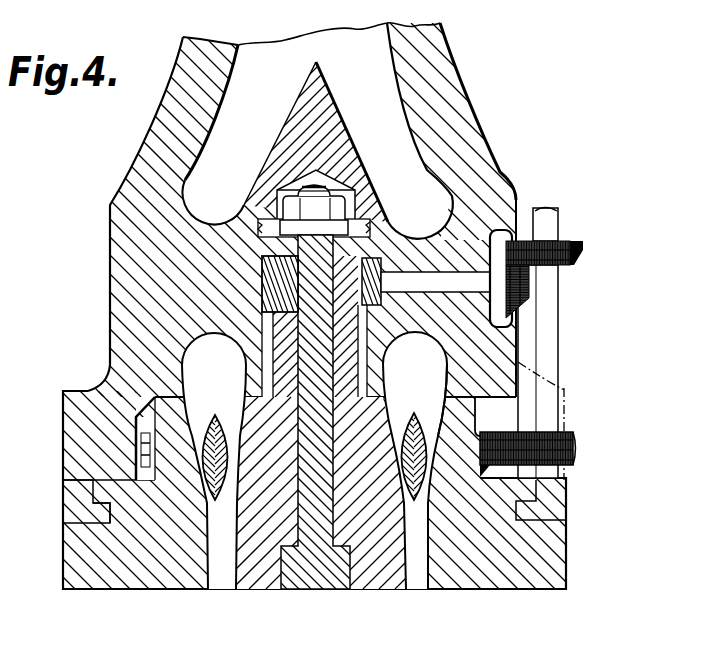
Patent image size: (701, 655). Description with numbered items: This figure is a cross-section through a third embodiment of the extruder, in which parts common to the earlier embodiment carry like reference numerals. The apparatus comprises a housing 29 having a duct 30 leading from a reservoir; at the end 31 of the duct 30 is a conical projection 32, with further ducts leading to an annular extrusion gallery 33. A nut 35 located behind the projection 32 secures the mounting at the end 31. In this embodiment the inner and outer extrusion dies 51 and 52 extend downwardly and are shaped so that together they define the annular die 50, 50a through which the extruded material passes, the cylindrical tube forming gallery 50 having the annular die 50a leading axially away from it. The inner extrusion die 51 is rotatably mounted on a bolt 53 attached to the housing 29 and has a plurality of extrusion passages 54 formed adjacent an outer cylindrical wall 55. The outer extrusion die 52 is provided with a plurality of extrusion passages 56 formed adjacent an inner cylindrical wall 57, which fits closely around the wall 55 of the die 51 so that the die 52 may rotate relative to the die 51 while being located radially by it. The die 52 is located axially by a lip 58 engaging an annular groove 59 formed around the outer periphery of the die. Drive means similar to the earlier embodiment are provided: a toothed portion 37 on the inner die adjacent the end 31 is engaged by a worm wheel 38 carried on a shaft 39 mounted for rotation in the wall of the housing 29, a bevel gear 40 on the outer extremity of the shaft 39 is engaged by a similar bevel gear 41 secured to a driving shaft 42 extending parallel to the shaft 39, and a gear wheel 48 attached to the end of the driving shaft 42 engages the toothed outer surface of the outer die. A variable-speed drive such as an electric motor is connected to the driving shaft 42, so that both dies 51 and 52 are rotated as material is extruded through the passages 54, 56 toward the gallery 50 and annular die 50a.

The housing 29 is at (108, 267).
The duct 30 is at (281, 58).
The end of the duct 31 is at (420, 155).
The conical projection 32 is at (322, 112).
The annular extrusion gallery 33 is at (219, 367).
The nut 35 is at (300, 205).
The toothed portion 37 is at (366, 252).
The worm wheel 38 is at (392, 251).
The shaft 39 is at (453, 273).
The bevel gear 40 is at (519, 306).
The bevel gear 41 is at (566, 255).
The driving shaft 42 is at (553, 366).
The gear wheel 48 is at (565, 448).
The cylindrical tube forming gallery 50 is at (418, 576).
The annular die 50a is at (217, 576).
The inner extrusion die 51 is at (373, 559).
The outer extrusion die 52 is at (148, 561).
The bolt 53 is at (323, 583).
The extrusion passages 54 is at (135, 445).
The outer cylindrical wall 55 is at (137, 447).
The extrusion passages 56 is at (433, 437).
The inner cylindrical wall 57 is at (414, 425).
The lip 58 is at (80, 516).
The annular groove 59 is at (110, 512).